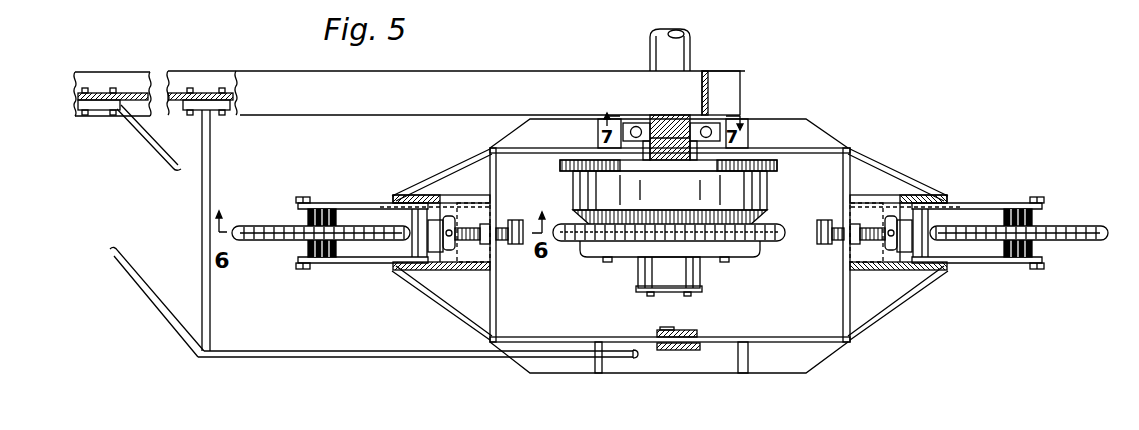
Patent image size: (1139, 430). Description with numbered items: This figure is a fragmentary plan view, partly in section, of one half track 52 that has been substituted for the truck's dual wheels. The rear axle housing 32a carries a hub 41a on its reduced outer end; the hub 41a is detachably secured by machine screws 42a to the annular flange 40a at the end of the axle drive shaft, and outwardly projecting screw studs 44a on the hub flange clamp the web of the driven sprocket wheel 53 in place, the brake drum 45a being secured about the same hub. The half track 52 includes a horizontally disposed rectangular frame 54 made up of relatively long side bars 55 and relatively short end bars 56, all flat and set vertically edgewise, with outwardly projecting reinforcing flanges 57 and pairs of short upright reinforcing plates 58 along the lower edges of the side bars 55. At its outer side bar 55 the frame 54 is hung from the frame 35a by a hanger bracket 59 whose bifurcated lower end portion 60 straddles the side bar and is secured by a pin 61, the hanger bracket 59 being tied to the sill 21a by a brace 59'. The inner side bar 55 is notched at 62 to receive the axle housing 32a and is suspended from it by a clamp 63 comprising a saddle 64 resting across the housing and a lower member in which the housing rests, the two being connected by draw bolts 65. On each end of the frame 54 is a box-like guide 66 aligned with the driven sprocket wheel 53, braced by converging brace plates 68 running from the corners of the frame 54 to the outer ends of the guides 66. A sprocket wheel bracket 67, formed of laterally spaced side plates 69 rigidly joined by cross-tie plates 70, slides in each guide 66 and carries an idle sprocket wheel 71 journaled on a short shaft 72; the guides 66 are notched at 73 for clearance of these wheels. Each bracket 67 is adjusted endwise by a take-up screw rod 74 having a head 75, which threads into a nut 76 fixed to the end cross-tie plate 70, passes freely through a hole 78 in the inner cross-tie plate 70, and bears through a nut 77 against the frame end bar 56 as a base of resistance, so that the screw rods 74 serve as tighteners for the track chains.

The sill 21a is at (256, 82).
The frame 35a is at (708, 74).
The rear axle housing 32a is at (682, 152).
The saddle 64 is at (648, 126).
The draw bolts 65 is at (645, 128).
The notch 62 is at (646, 152).
The clamp 63 is at (696, 143).
The brake drum 45a is at (760, 207).
The sprocket wheel 53 is at (763, 244).
The screw studs 44a is at (607, 262).
The hub 41a is at (700, 276).
The annular flange 40a is at (702, 290).
The machine screws 42a is at (684, 295).
The half track 52 is at (841, 124).
The rectangular frame 54 is at (878, 337).
The side bars 55 is at (821, 153).
The end bars 56 is at (497, 337).
The reinforcing flanges 57 is at (807, 124).
The bracket 58 is at (598, 137).
The hanger bracket 59 is at (688, 325).
The brace 59' is at (415, 366).
The bifurcated lower end portion 60 is at (690, 350).
The pin 61 is at (660, 351).
The box-like guide 66 is at (476, 205).
The sprocket wheel bracket 67 is at (346, 204).
The converging brace plates 68 is at (456, 165).
The side plates 69 is at (304, 198).
The cross-tie plates 70 is at (448, 240).
The idle sprocket wheel 71 is at (246, 230).
The short shaft 72 is at (326, 252).
The notches 73 is at (399, 272).
The take-up screw rods 74 is at (508, 228).
The heads 75 is at (523, 228).
The nuts 76 is at (446, 251).
The nuts 77 is at (488, 241).
The holes 78 is at (412, 233).